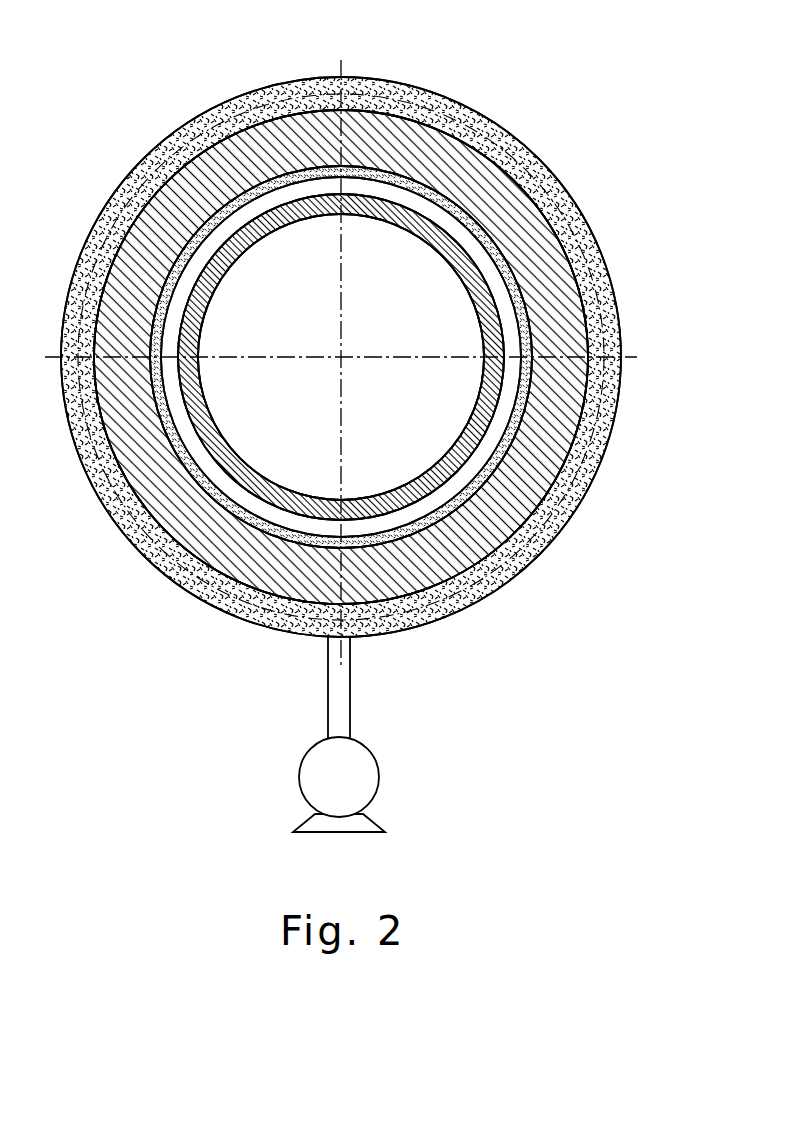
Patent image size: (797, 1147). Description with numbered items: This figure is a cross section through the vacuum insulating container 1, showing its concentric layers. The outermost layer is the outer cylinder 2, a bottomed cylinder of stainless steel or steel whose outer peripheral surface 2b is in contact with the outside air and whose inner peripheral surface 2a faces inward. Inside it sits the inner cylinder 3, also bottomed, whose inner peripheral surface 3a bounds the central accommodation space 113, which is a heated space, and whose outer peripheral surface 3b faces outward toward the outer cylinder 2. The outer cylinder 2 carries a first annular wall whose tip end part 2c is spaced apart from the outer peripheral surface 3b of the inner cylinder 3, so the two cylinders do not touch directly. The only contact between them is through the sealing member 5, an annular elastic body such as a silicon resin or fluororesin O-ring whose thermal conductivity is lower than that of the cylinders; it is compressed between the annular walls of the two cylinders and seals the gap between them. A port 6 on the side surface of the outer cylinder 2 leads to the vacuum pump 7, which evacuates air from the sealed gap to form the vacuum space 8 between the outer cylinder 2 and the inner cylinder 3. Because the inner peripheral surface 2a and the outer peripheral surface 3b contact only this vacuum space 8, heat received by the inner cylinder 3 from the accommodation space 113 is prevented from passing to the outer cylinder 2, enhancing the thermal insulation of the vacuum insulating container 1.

The vacuum insulating container 1 is at (274, 35).
The outer cylinder 2 is at (513, 578).
The inner peripheral surface of the outer cylinder 2a is at (405, 490).
The outer peripheral surface of the outer cylinder 2b is at (468, 608).
The tip end part 2c is at (452, 495).
The inner cylinder 3 is at (483, 380).
The inner peripheral surface of the inner cylinder 3a is at (472, 421).
The outer peripheral surface of the inner cylinder 3b is at (492, 432).
The sealing member 5 is at (557, 298).
The vacuum space 8 is at (493, 277).
The accommodation space 113 is at (415, 293).
The port 6 is at (343, 700).
The vacuum pump 7 is at (370, 807).